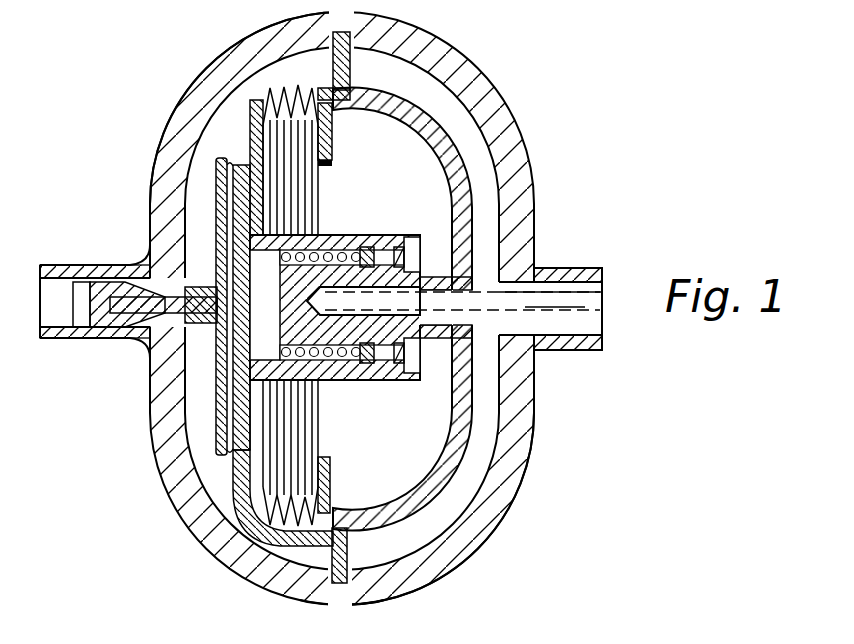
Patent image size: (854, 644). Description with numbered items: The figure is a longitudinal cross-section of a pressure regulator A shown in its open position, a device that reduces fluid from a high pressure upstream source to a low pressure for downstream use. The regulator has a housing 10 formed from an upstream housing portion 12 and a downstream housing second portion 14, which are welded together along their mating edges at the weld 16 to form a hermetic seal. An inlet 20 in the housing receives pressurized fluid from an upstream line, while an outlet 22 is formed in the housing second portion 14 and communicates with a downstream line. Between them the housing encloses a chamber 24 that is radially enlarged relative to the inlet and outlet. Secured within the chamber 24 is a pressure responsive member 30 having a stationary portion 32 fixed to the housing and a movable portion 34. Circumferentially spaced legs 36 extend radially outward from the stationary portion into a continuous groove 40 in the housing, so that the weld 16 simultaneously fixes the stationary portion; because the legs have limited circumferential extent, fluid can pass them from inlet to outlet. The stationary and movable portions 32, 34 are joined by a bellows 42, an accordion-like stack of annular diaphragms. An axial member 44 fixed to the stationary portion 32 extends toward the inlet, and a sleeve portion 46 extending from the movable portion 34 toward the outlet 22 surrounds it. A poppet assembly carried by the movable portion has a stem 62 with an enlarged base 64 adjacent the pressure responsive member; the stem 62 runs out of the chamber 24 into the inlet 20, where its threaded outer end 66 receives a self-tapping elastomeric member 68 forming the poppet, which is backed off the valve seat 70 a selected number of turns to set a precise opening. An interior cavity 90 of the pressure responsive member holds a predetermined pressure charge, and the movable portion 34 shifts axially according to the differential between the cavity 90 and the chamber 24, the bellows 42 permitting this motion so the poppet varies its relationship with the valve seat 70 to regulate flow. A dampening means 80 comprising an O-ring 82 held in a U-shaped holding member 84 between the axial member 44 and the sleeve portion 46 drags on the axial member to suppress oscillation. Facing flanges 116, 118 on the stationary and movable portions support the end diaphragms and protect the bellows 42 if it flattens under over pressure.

The housing 10 is at (512, 147).
The housing portion 12 is at (175, 128).
The housing second portion 14 is at (470, 562).
The weld 16 is at (326, 600).
The inlet 20 is at (58, 267).
The outlet 22 is at (580, 268).
The chamber 24 is at (484, 432).
The pressure responsive member 30 is at (238, 469).
The stationary portion 32 is at (456, 140).
The movable portion 34 is at (240, 500).
The legs 36 is at (352, 60).
The groove 40 is at (343, 566).
The bellows 42 is at (268, 82).
The axial member 44 is at (436, 380).
The sleeve portion 46 is at (350, 381).
The stem 62 is at (216, 258).
The enlarged base 64 is at (220, 176).
The outer end 66 is at (136, 326).
The elastomeric member 68 is at (110, 314).
The valve seat 70 is at (186, 402).
The dampening means 80 is at (377, 394).
The O-ring 82 is at (382, 247).
The holding member 84 is at (400, 247).
The interior cavity 90 is at (378, 153).
The flange 116 is at (300, 62).
The flange 118 is at (272, 535).
The pressure regulator A is at (532, 74).